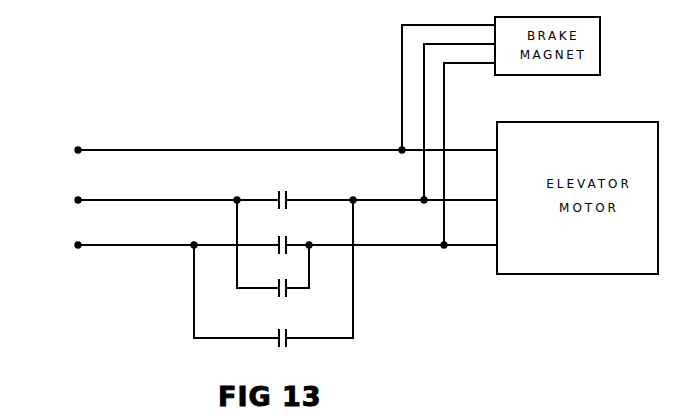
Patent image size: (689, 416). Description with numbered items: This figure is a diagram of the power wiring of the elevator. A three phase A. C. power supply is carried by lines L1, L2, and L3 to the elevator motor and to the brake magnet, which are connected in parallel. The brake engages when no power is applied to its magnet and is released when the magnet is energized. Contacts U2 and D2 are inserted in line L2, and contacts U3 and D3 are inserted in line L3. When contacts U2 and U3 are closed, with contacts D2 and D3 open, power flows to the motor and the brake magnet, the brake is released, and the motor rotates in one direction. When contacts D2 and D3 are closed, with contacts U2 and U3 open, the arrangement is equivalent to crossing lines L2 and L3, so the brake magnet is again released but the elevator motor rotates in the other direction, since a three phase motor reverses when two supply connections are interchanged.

The power supply line L1 is at (267, 90).
The power supply line L2 is at (267, 124).
The power supply line L3 is at (267, 156).
The contact U2 is at (280, 188).
The contact U3 is at (280, 235).
The contact D2 is at (273, 248).
The contact D3 is at (273, 273).